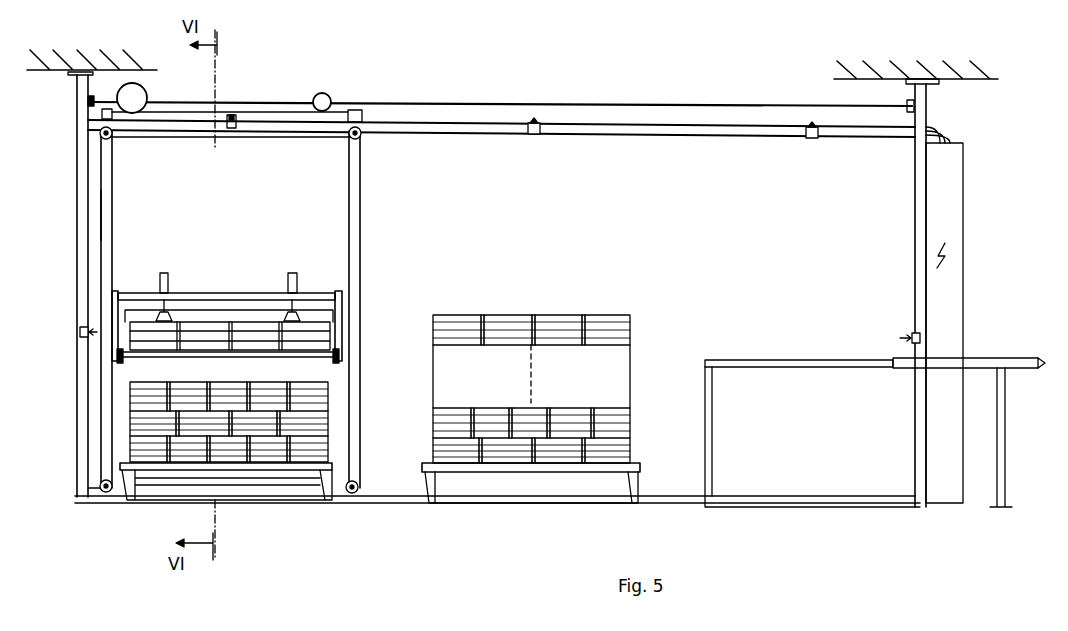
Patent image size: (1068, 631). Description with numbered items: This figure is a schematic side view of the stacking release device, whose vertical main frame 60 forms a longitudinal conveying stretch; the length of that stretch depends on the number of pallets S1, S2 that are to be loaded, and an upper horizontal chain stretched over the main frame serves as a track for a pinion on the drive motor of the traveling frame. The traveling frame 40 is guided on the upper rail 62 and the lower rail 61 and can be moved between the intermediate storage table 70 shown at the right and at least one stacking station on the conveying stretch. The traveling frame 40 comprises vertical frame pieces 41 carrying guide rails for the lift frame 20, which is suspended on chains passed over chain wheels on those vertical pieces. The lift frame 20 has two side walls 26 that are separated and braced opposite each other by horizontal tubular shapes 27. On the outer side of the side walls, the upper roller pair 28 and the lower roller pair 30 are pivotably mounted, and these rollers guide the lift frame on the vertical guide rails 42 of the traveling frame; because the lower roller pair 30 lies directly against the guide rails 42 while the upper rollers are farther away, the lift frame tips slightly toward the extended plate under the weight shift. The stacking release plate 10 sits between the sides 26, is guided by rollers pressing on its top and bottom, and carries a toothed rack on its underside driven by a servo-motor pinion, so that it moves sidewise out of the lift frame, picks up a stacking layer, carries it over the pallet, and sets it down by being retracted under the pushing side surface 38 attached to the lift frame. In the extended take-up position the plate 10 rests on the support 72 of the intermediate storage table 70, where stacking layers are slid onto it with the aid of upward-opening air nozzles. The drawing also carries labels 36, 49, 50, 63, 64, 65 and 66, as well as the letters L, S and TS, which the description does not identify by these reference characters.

The stacking release plate 10 is at (255, 353).
The lift frame 20 is at (255, 311).
The side walls 26 is at (117, 292).
The horizontal tubular shapes 27 is at (216, 293).
The upper roller pair 28 is at (343, 298).
The lower roller pair 30 is at (338, 358).
The suction pin 36 is at (165, 272).
The pushing side surface 38 is at (327, 318).
The traveling frame 40 is at (253, 310).
The vertical frame pieces 41 is at (112, 170).
The vertical guide rails 42 is at (113, 218).
The lower pivot joint 49 is at (358, 485).
The roller 50 is at (147, 93).
The vertical main frame 60 is at (910, 166).
The lower rail 61 is at (405, 504).
The upper rail 62 is at (668, 128).
The roller 63 is at (327, 96).
The upper rail 64 is at (497, 101).
The limit switch 65 is at (534, 136).
The sensor 66 is at (79, 332).
The intermediate storage table 70 is at (991, 358).
The support 72 is at (860, 368).
The layer of boxes L is at (328, 338).
The stack S is at (632, 358).
The pallet S1 is at (535, 475).
The pallet S2 is at (279, 473).
The partial stack TS is at (130, 403).